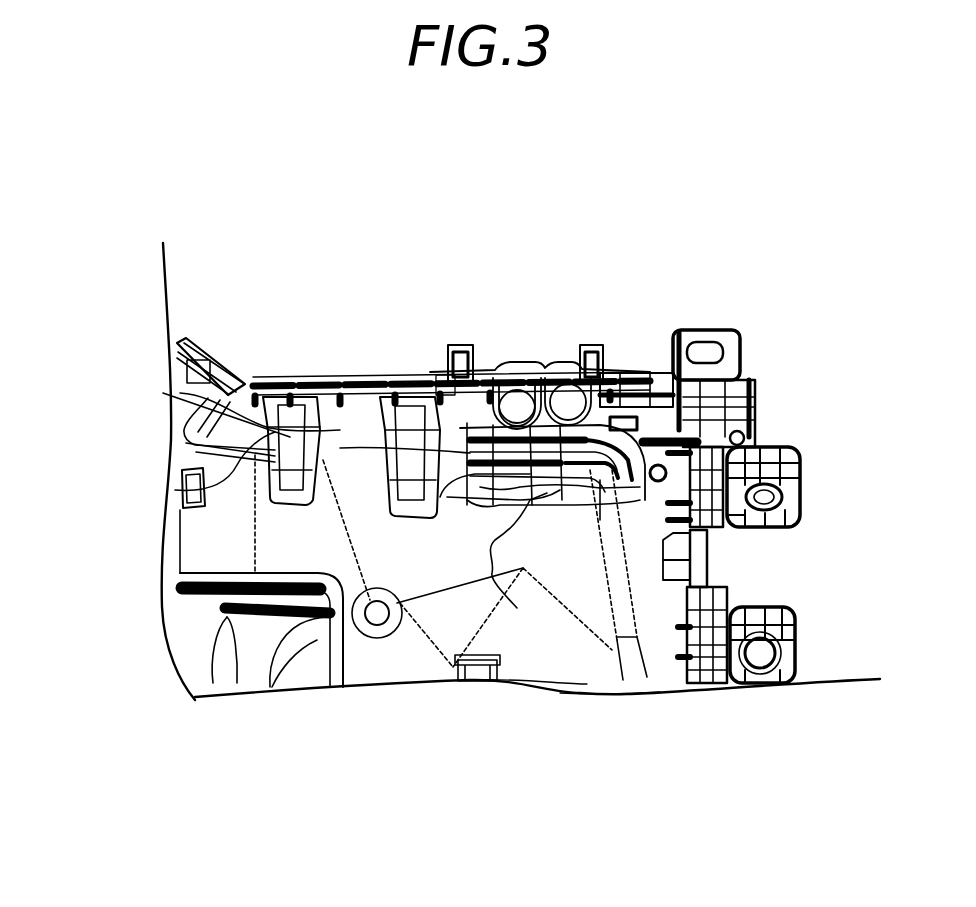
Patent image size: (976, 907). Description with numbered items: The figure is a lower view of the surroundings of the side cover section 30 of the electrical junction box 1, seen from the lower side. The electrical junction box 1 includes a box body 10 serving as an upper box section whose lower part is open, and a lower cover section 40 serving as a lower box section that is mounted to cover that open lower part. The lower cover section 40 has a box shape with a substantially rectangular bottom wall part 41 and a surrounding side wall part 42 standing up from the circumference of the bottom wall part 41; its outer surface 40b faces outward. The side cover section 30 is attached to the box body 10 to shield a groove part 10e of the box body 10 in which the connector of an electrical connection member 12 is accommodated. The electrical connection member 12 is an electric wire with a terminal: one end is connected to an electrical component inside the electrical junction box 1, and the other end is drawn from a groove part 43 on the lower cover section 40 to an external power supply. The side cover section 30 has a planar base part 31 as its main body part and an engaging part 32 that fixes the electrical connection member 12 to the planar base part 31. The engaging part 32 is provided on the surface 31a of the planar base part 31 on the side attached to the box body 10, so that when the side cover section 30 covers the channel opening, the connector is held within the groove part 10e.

The electrical junction box 1 is at (476, 177).
The box body 10 is at (380, 374).
The groove part 10e is at (443, 381).
The electrical connection member 12 is at (565, 378).
The side cover section 30 is at (528, 360).
The planar base part 31 is at (489, 365).
The surface 31a is at (447, 497).
The engaging part 32 is at (560, 493).
The lower cover section 40 is at (613, 653).
The outer surface 40b is at (180, 393).
The bottom wall part 41 is at (583, 686).
The side wall part 42 is at (197, 482).
The groove part 43 is at (587, 682).